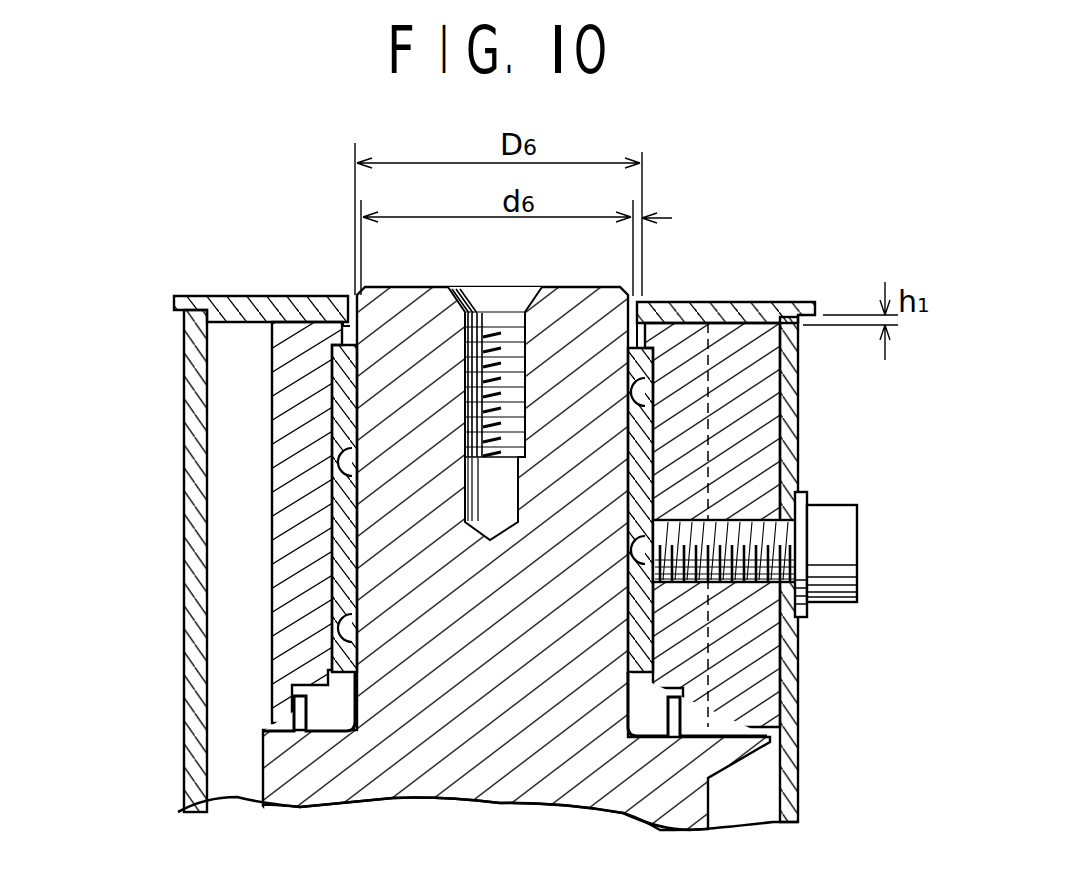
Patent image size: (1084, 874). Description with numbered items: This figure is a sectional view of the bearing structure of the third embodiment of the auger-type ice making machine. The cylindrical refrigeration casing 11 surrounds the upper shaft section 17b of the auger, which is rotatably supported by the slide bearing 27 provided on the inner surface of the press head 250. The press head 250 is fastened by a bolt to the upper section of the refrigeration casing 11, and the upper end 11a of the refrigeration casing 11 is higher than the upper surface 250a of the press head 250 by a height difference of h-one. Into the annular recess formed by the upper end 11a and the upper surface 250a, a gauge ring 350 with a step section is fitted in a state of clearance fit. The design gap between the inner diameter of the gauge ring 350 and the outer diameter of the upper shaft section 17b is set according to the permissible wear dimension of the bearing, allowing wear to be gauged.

The upper shaft section 17b is at (567, 620).
The upper end of the refrigeration casing 11a is at (190, 323).
The gauge ring 350 is at (267, 296).
The press head 250 is at (290, 478).
The slide bearing 27 is at (335, 576).
The upper surface of the press head 250a is at (740, 303).
The refrigeration casing 11 is at (790, 393).